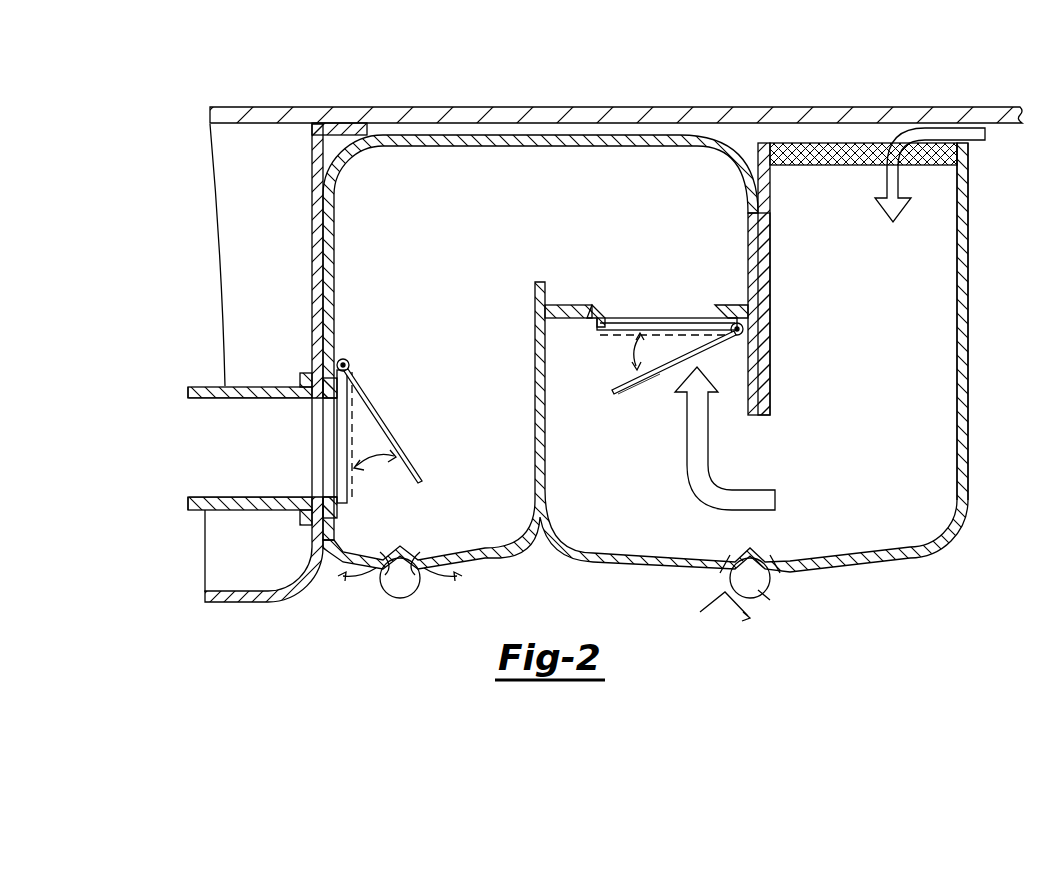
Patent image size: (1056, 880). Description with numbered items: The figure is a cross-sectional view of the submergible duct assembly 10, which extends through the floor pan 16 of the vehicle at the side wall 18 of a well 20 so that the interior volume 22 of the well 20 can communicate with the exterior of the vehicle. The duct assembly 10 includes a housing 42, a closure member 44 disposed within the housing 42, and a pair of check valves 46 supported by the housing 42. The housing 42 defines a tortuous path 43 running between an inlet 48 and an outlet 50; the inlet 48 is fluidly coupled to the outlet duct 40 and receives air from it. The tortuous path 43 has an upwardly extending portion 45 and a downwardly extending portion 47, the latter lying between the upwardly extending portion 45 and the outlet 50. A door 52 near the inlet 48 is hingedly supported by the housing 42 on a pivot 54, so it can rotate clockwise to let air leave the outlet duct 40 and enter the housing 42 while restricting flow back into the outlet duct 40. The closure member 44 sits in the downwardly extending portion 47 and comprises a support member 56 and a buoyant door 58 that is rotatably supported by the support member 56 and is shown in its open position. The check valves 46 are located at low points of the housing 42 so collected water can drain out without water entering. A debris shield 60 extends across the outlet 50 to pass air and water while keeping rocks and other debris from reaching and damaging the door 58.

The duct assembly 10 is at (555, 84).
The floor pan 16 is at (1000, 105).
The side wall 18 is at (318, 180).
The well 20 is at (224, 596).
The interior volume 22 is at (250, 216).
The outlet duct 40 is at (206, 386).
The housing 42 is at (974, 307).
The tortuous path 43 is at (464, 172).
The closure member 44 is at (670, 356).
The upwardly extending portion 45 is at (486, 354).
The check valves 46 is at (396, 588).
The downwardly extending portion 47 is at (682, 256).
The inlet 48 is at (336, 441).
The outlet 50 is at (808, 140).
The door 52 is at (394, 413).
The pivot 54 is at (350, 360).
The support member 56 is at (578, 304).
The door 58 is at (616, 378).
The debris shield 60 is at (800, 166).